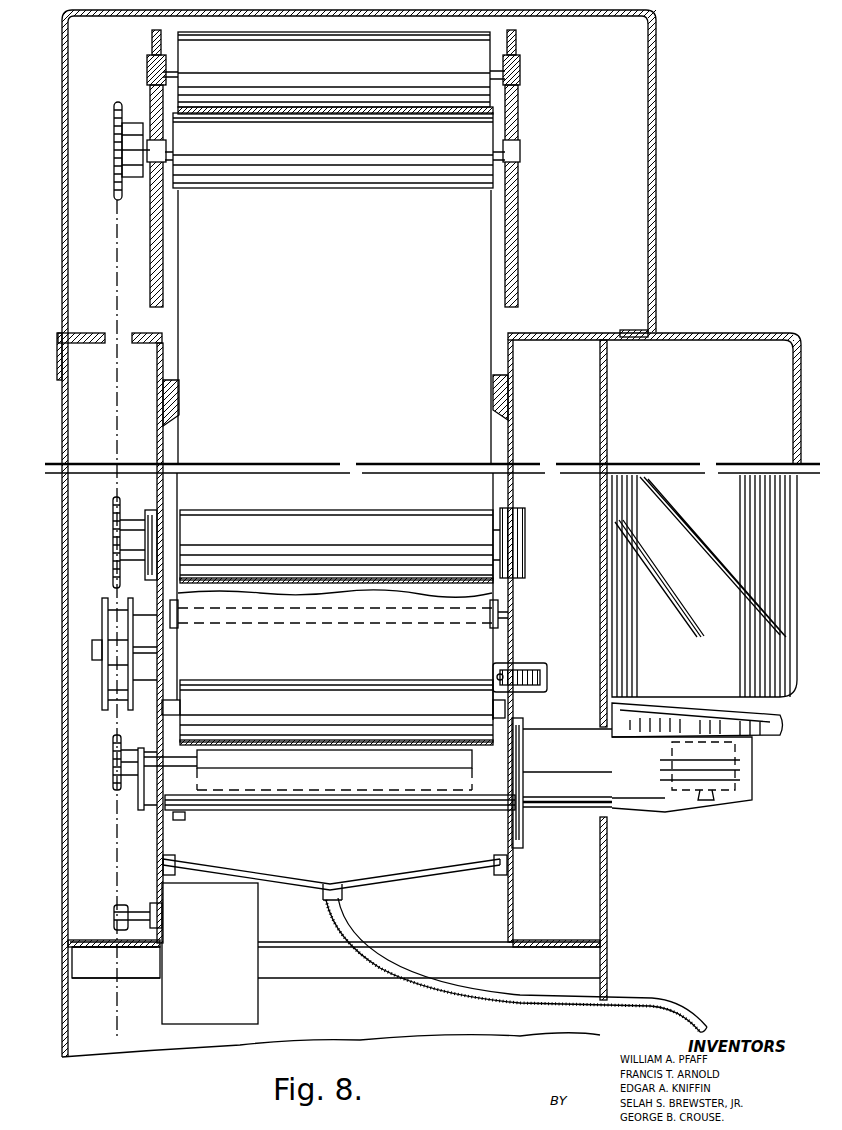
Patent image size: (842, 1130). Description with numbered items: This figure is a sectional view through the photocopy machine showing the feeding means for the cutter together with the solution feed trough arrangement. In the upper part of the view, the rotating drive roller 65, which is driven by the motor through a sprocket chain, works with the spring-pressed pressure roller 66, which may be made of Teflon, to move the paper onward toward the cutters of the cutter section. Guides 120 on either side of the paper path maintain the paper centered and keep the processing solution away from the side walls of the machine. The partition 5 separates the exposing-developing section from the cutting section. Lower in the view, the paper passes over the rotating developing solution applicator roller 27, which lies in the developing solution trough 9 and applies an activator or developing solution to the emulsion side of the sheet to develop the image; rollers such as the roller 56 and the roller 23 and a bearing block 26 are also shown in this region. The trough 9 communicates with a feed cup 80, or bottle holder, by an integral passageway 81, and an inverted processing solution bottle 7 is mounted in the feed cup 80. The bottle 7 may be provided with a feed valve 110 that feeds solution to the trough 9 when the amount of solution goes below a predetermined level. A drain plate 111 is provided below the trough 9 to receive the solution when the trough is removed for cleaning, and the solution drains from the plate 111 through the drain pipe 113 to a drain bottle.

The partition 5 is at (246, 740).
The processing solution bottle 7 is at (707, 608).
The solution trough 9 is at (393, 801).
The roller 23 is at (340, 697).
The bearing block 26 is at (526, 670).
The developing solution applicator roller 27 is at (338, 783).
The roller 56 is at (485, 521).
The drive roller 65 is at (348, 147).
The pressure roller 66 is at (346, 65).
The feed cup 80 is at (741, 785).
The passageway 81 is at (575, 806).
The feed valve 110 is at (735, 766).
The drain plate 111 is at (420, 876).
The drain pipe 113 is at (666, 1009).
The guide 120 is at (172, 396).